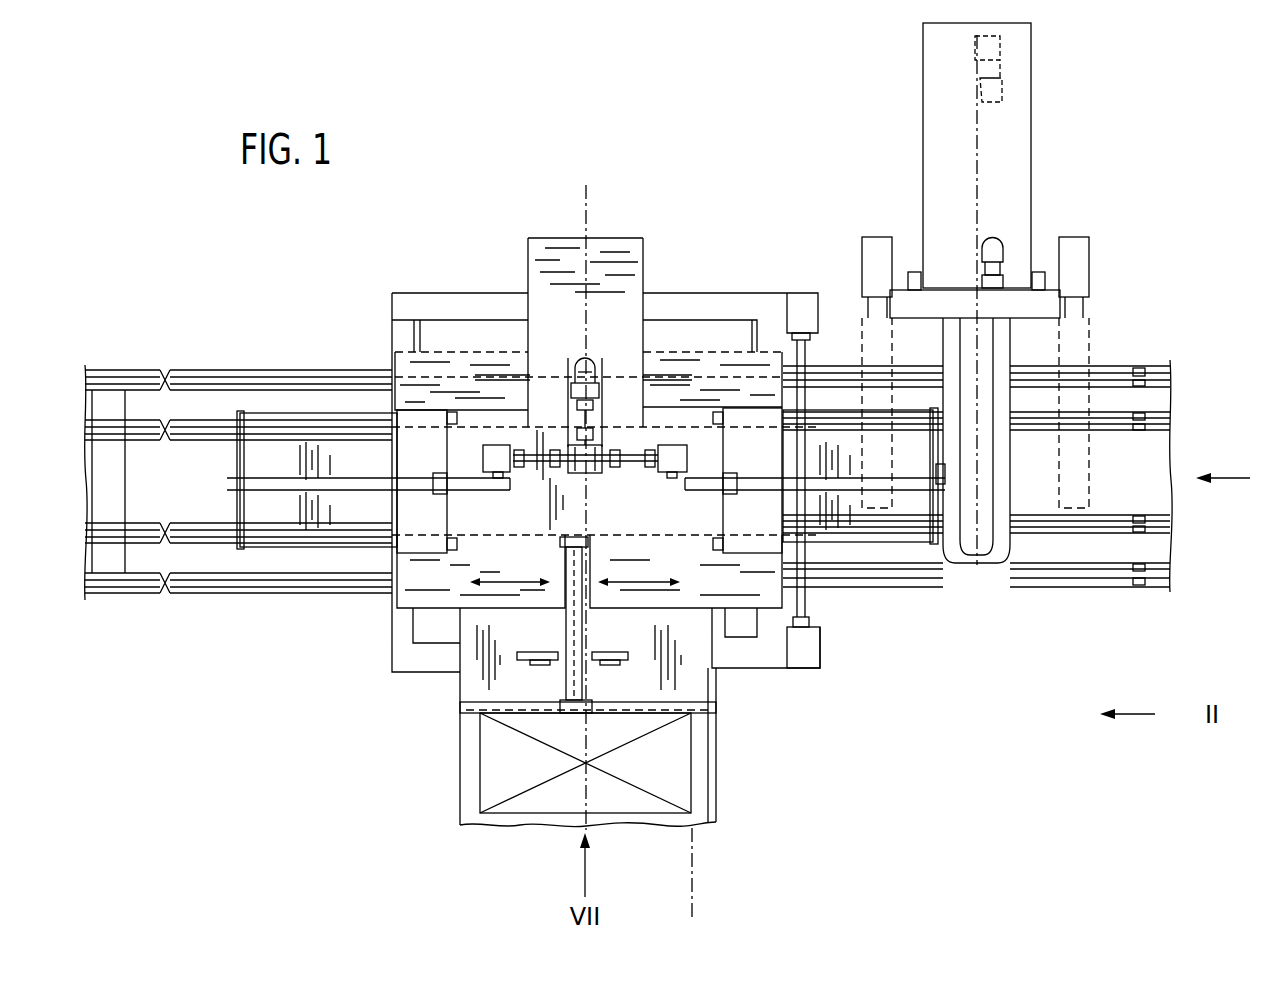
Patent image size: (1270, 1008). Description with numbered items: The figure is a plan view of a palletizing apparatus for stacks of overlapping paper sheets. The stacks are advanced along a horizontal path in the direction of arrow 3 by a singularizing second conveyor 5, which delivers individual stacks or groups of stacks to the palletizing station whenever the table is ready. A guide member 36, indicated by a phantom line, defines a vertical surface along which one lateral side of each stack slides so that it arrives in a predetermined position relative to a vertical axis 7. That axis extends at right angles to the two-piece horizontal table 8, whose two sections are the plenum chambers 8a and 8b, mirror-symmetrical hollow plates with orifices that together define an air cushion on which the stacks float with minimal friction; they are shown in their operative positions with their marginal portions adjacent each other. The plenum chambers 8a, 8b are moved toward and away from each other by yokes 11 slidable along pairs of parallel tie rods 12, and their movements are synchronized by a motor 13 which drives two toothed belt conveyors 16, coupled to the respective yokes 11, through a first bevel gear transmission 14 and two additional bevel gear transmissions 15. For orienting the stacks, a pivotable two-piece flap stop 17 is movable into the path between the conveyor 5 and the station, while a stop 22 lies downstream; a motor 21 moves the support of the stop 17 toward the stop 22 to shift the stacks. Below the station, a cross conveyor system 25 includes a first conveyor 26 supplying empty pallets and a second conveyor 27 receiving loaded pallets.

The arrow 3 is at (658, 775).
The second conveyor 5 is at (705, 803).
The vertical axis 7 is at (600, 450).
The two-piece horizontal table 8 is at (769, 608).
The plenum chamber 8a is at (448, 378).
The plenum chamber 8b is at (738, 385).
The yokes 11 is at (408, 462).
The tie rods 12 is at (298, 413).
The motor 13 is at (589, 366).
The first bevel gear transmission 14 is at (590, 470).
The additional bevel gear transmissions 15 is at (484, 463).
The toothed belt conveyors 16 is at (360, 478).
The stop 17 is at (552, 651).
The motor 21 is at (566, 682).
The stop 22 is at (664, 376).
The cross conveyor system 25 is at (1115, 350).
The first conveyor 26 is at (1106, 588).
The second conveyor 27 is at (149, 360).
The guide member 36 is at (694, 873).